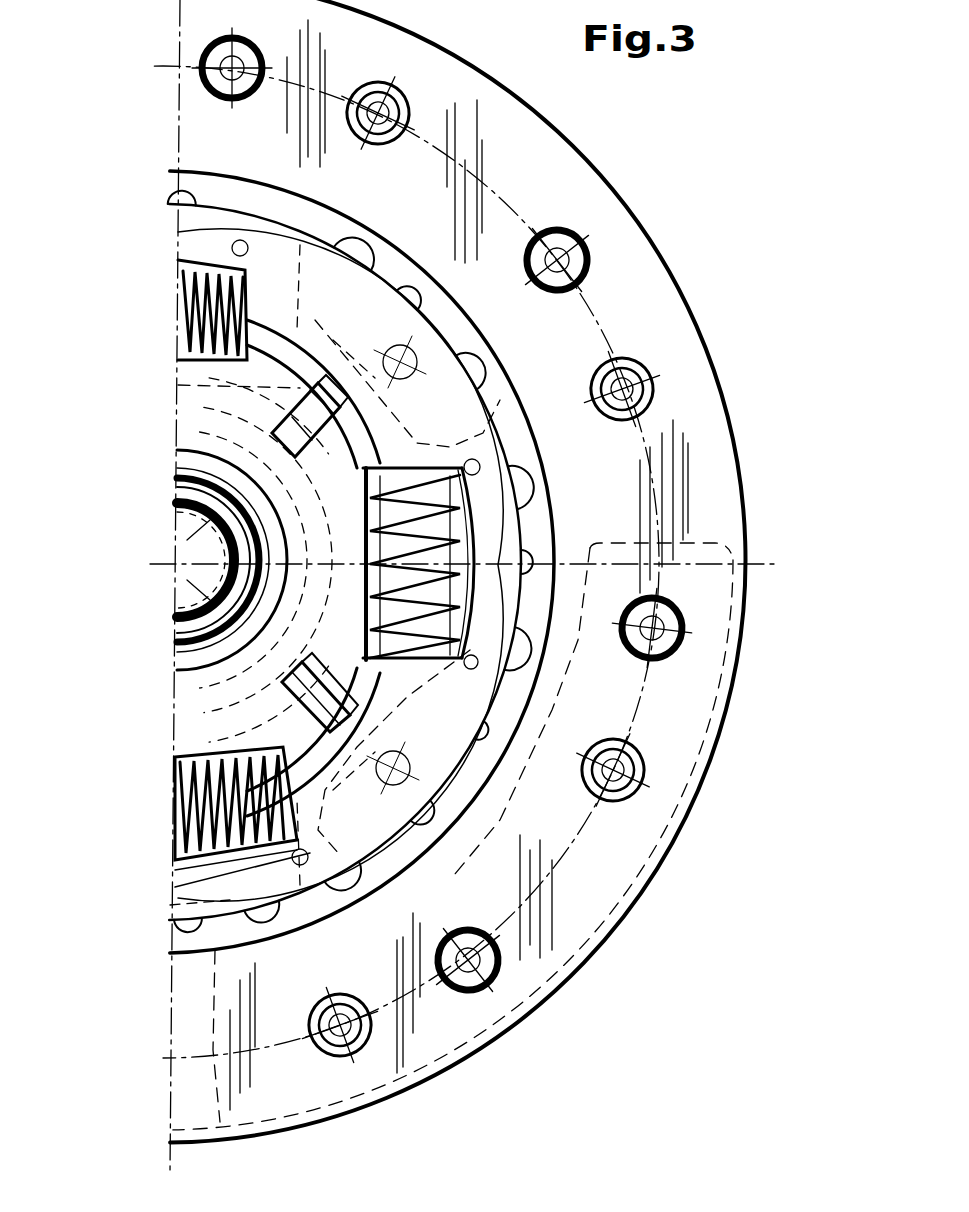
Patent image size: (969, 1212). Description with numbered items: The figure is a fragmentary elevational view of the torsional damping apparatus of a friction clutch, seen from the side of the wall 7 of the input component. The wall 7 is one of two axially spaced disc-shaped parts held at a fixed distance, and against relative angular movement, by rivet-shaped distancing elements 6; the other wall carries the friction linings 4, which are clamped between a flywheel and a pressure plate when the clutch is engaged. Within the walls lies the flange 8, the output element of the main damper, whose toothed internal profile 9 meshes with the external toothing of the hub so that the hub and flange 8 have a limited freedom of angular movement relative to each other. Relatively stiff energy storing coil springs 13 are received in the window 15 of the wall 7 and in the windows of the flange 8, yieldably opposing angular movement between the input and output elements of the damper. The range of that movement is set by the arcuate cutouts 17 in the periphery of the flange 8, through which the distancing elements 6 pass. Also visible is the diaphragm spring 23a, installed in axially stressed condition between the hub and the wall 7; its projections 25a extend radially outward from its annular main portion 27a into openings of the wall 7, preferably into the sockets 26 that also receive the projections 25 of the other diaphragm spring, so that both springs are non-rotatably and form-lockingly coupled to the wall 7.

The friction linings 4 is at (600, 893).
The distancing elements 6 is at (412, 765).
The wall 7 is at (355, 820).
The flange 8 is at (215, 522).
The toothed internal profile 9 is at (213, 593).
The coil springs 13 is at (165, 800).
The window 15 is at (175, 760).
The arcuate cutouts 17 is at (225, 903).
The diaphragm spring 23a is at (208, 470).
The projections 25 is at (282, 682).
The projections 25a is at (327, 702).
The sockets 26 is at (445, 672).
The annular main portion 27a is at (287, 565).